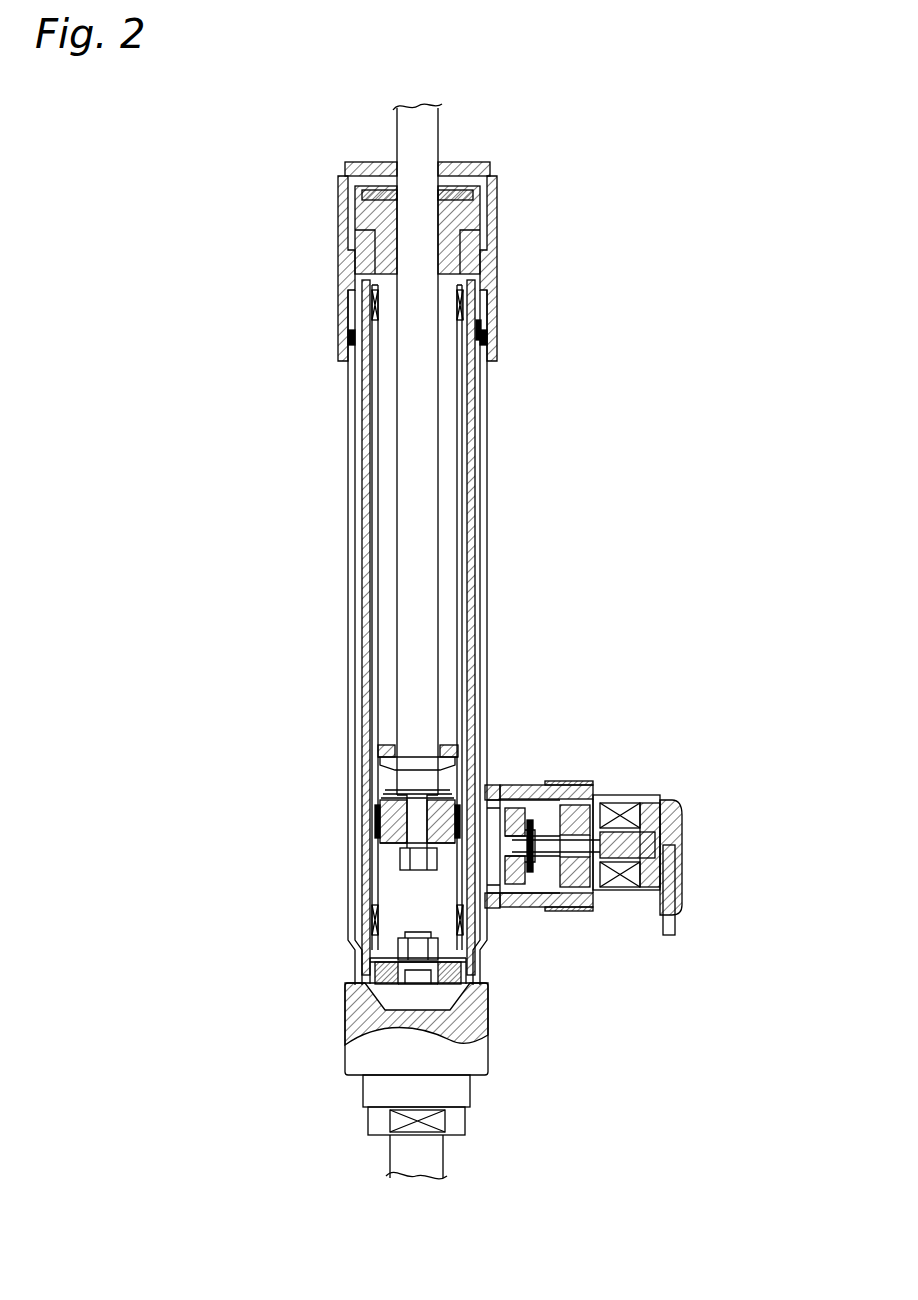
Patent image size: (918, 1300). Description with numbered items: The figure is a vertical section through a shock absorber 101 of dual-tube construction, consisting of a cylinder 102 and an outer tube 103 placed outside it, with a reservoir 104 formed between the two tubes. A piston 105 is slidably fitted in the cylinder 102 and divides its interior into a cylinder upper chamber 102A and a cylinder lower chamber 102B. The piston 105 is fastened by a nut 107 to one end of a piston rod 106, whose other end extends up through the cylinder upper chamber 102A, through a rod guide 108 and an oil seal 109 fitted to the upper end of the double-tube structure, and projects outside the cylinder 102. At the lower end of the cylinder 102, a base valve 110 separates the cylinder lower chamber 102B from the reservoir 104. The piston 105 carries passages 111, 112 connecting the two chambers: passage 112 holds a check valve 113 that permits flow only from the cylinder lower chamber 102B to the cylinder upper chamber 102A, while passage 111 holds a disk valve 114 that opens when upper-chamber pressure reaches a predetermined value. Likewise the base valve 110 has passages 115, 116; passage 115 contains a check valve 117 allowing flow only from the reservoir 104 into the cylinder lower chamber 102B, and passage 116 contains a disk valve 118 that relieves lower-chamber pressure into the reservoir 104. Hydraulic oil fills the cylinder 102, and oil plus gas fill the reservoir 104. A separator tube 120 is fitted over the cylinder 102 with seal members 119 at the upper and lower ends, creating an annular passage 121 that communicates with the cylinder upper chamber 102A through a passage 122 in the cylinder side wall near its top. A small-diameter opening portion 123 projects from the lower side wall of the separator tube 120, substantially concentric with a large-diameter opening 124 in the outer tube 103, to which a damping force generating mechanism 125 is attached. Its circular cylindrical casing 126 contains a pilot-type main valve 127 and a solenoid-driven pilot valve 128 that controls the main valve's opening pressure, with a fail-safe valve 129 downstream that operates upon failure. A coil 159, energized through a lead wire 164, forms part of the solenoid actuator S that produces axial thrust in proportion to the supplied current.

The shock absorber 101 is at (495, 641).
The cylinder 102 is at (470, 396).
The cylinder upper chamber 102A is at (388, 520).
The cylinder lower chamber 102B is at (393, 938).
The outer tube 103 is at (485, 500).
The reservoir 104 is at (355, 395).
The piston 105 is at (395, 832).
The piston rod 106 is at (415, 138).
The nut 107 is at (370, 892).
The rod guide 108 is at (365, 258).
The oil seal 109 is at (455, 180).
The base valve 110 is at (447, 968).
The passage 111 is at (376, 812).
The passage 112 is at (466, 800).
The check valve 113 is at (450, 742).
The disk valve 114 is at (402, 858).
The passage 115 is at (356, 990).
The passage 116 is at (455, 1000).
The check valve 117 is at (380, 964).
The disk valve 118 is at (480, 1040).
The seal members 119 is at (360, 296).
The separator tube 120 is at (365, 460).
The annular passage 121 is at (470, 446).
The passage 122 is at (480, 333).
The small-diameter opening portion 123 is at (497, 792).
The large-diameter opening 124 is at (487, 875).
The damping force generating mechanism 125 is at (622, 848).
The casing 126 is at (557, 792).
The main valve 127 is at (528, 905).
The pilot valve 128 is at (555, 907).
The fail-safe valve 129 is at (598, 905).
The coil 159 is at (648, 800).
The lead wire 164 is at (676, 918).
The solenoid actuator S is at (637, 905).